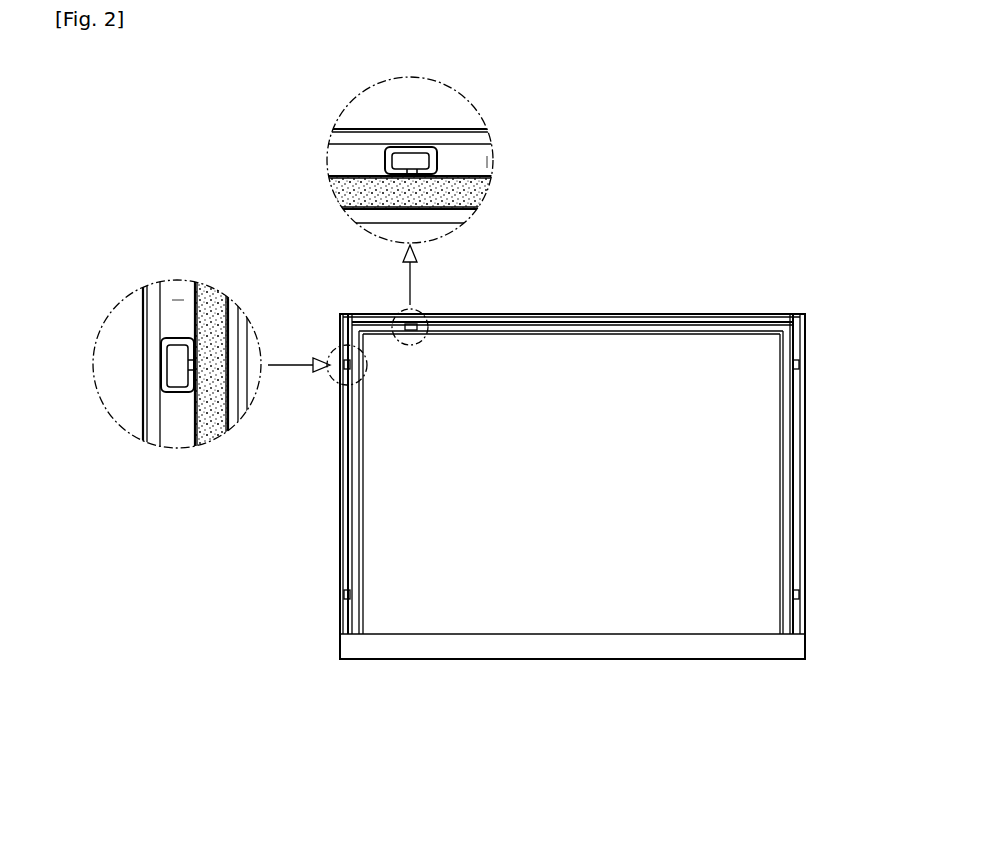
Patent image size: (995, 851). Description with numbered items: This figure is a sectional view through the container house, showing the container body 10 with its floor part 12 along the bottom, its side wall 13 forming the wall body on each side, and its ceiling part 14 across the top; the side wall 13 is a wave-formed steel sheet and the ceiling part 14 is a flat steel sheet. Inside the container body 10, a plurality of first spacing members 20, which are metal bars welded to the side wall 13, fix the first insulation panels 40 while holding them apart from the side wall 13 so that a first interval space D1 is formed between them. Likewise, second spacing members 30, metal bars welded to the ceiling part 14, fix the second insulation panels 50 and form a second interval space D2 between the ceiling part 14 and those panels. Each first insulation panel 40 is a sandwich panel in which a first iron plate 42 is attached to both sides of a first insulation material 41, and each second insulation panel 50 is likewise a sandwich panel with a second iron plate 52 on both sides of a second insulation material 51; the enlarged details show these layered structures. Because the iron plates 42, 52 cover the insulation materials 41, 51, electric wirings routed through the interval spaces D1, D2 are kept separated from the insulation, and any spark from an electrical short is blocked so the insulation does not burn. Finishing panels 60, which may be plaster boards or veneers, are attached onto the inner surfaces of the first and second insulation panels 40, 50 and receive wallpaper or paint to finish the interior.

The container body 10 is at (447, 402).
The floor part 12 is at (658, 650).
The side wall 13 is at (805, 542).
The ceiling part 14 is at (462, 130).
The first spacing member 20 is at (165, 357).
The second spacing member 30 is at (415, 147).
The first insulation panel 40 is at (219, 415).
The first insulation material 41 is at (210, 435).
The first iron plate 42 is at (273, 513).
The second insulation panel 50 is at (360, 197).
The second insulation material 51 is at (345, 195).
The second iron plate 52 is at (345, 178).
The finishing panel 60 is at (622, 335).
The first interval space D1 is at (178, 300).
The second interval space D2 is at (487, 162).